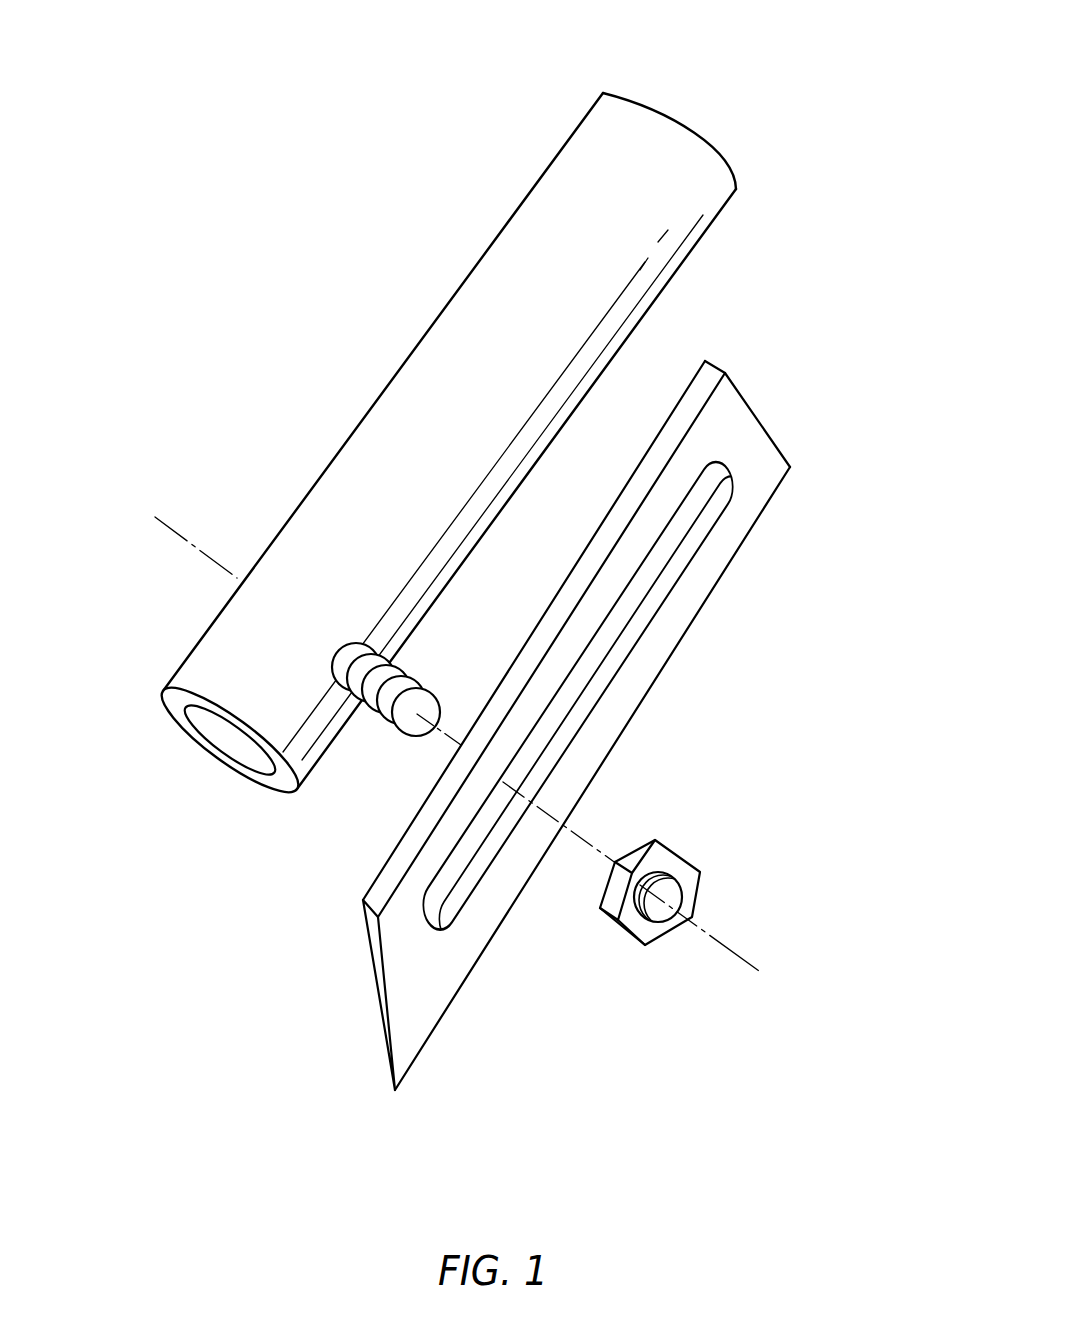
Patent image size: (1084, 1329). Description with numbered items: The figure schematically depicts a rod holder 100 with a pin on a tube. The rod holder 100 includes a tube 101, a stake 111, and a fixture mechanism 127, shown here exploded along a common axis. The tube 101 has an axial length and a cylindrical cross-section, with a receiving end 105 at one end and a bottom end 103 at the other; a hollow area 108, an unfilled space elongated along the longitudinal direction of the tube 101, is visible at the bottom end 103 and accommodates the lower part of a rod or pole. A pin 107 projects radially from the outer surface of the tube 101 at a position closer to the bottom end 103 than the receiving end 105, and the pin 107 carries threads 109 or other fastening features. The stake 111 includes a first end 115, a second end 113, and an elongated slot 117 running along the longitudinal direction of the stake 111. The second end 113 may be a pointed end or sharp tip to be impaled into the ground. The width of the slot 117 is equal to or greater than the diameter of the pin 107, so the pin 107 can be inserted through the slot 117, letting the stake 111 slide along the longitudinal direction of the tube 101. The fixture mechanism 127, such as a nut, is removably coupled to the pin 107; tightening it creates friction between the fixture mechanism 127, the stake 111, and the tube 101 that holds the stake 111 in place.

The rod holder 100 is at (430, 118).
The tube 101 is at (405, 228).
The bottom end 103 is at (165, 688).
The receiving end 105 is at (675, 120).
The pin 107 is at (405, 672).
The hollow area 108 is at (183, 710).
The threads 109 is at (363, 712).
The stake 111 is at (870, 437).
The second end 113 is at (375, 975).
The first end 115 is at (760, 416).
The elongated slot 117 is at (648, 610).
The fixture mechanism 127 is at (668, 847).